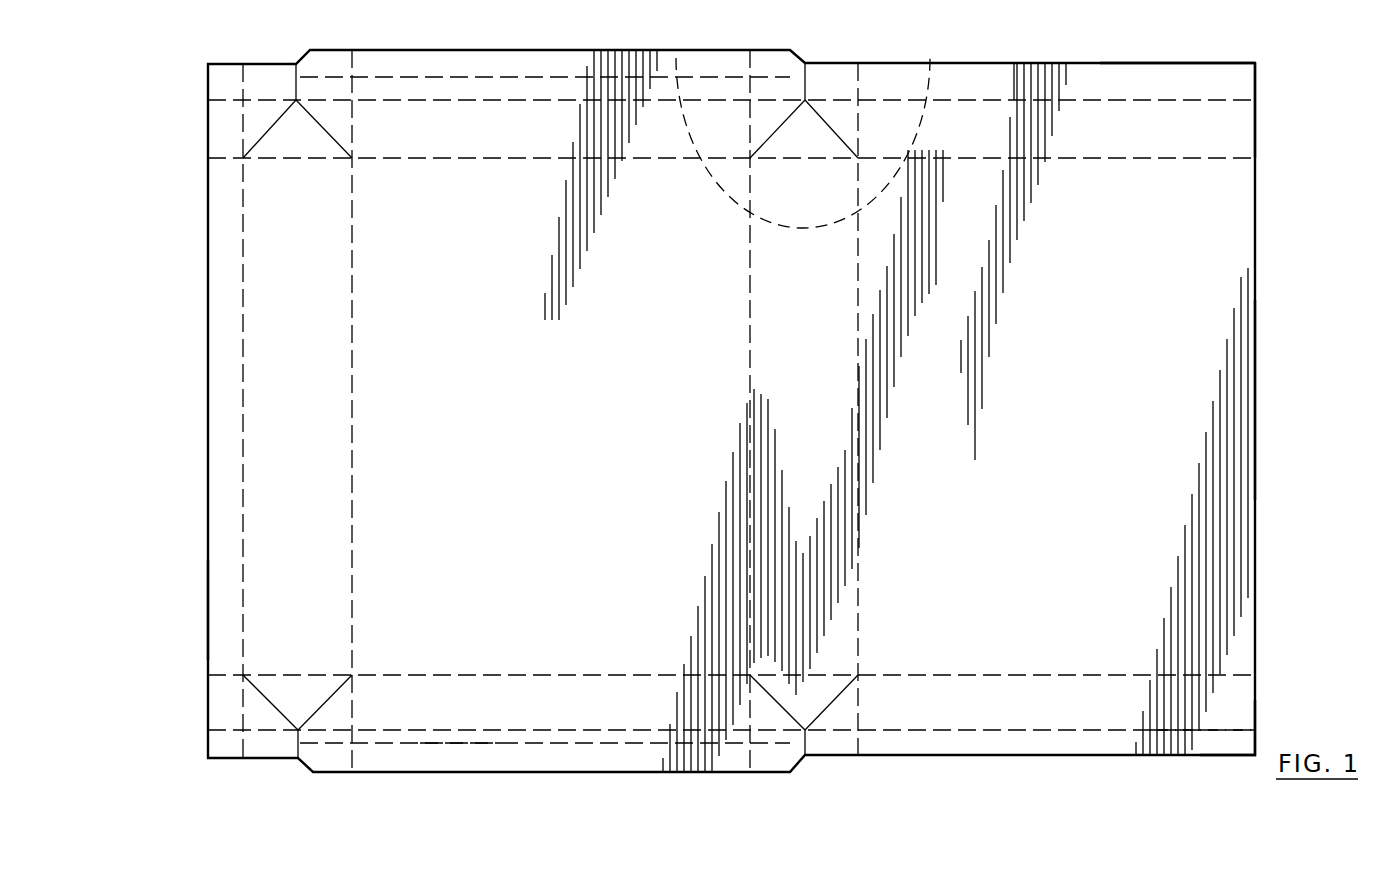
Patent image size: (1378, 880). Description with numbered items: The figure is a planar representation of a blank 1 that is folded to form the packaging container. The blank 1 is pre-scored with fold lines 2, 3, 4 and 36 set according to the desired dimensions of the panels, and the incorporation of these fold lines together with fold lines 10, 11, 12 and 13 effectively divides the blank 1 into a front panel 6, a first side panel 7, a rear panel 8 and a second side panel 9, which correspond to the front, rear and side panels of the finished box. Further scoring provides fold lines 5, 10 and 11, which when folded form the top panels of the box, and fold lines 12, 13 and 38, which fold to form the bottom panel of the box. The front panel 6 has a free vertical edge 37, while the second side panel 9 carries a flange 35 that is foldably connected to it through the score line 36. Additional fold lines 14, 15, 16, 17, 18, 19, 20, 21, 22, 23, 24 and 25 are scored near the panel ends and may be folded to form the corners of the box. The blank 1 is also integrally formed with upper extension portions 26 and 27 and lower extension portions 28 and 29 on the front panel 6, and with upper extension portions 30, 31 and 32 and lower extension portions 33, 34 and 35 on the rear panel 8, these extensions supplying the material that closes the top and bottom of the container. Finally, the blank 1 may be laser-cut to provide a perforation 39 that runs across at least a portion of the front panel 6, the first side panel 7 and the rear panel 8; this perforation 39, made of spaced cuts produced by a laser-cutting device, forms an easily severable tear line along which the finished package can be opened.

The blank 1 is at (196, 228).
The fold line 2 is at (858, 358).
The fold line 3 is at (750, 356).
The fold line 4 is at (357, 354).
The fold line 5 is at (375, 76).
The front panel 6 is at (1078, 381).
The first side panel 7 is at (812, 381).
The rear panel 8 is at (536, 381).
The second side panel 9 is at (298, 381).
The fold line 10 is at (1068, 155).
The fold line 11 is at (1033, 100).
The fold line 12 is at (981, 677).
The fold line 13 is at (1048, 735).
The fold line 14 is at (830, 123).
The fold line 15 is at (840, 24).
The fold line 16 is at (786, 124).
The fold line 17 is at (830, 703).
The fold line 18 is at (785, 702).
The fold line 19 is at (806, 733).
The fold line 20 is at (293, 91).
The fold line 21 is at (302, 110).
The fold line 22 is at (267, 128).
The fold line 23 is at (322, 703).
The fold line 24 is at (300, 739).
The fold line 25 is at (273, 700).
The upper extension portion 26 is at (1234, 125).
The upper extension portion 27 is at (1190, 78).
The lower extension portion 28 is at (1235, 718).
The lower extension portion 29 is at (1230, 746).
The upper extension portion 30 is at (563, 118).
The upper extension portion 31 is at (500, 84).
The upper extension portion 32 is at (448, 66).
The lower extension portion 33 is at (421, 703).
The lower extension portion 34 is at (583, 737).
The flange 35 is at (240, 574).
The score line 36 is at (240, 596).
The free vertical edge 37 is at (1262, 396).
The fold line 38 is at (452, 745).
The perforation 39 is at (930, 74).